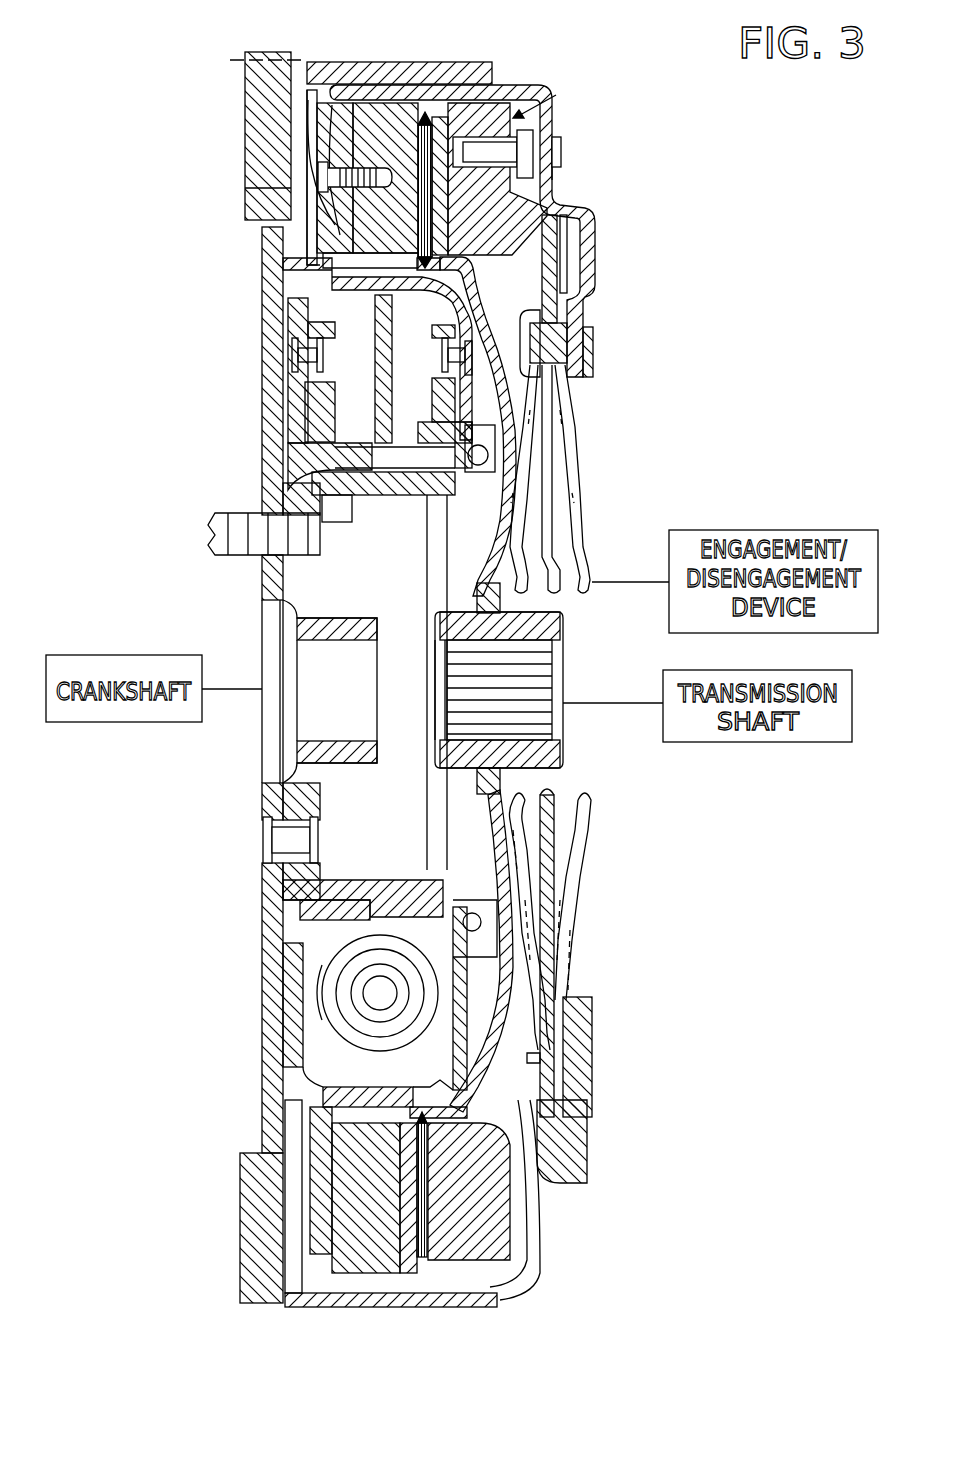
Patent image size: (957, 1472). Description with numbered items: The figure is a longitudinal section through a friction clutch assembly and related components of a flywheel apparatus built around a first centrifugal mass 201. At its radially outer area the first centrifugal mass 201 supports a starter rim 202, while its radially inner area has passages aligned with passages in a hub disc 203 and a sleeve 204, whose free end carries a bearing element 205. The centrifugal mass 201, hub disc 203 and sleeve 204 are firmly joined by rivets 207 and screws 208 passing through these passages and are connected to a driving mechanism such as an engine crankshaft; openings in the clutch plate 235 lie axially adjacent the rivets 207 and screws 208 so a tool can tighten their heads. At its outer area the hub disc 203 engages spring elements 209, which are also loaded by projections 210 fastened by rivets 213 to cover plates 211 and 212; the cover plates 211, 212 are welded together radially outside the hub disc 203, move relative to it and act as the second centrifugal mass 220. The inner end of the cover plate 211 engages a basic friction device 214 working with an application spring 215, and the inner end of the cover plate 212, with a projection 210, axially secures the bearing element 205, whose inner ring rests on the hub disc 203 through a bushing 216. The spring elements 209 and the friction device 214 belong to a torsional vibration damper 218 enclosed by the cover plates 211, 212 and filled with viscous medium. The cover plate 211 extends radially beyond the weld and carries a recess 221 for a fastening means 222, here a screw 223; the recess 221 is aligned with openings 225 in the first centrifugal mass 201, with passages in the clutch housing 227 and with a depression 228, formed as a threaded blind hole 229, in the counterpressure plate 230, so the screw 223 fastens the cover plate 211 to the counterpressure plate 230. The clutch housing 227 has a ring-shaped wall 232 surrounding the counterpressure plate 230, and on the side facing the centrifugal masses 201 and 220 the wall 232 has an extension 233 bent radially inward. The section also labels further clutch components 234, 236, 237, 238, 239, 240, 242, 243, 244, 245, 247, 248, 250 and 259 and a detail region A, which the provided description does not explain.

The first centrifugal mass 201 is at (255, 468).
The starter rim 202 is at (268, 78).
The hub disc 203 is at (378, 395).
The sleeve 204 is at (262, 497).
The bearing element 205 is at (490, 488).
The rivets 207 is at (285, 840).
The screws 208 is at (230, 557).
The spring elements 209 is at (345, 1045).
The projections 210 is at (335, 432).
The cover plate 211 is at (305, 320).
The cover plate 212 is at (470, 403).
The rivets 213 is at (440, 350).
The basic friction device 214 is at (285, 945).
The application spring 215 is at (300, 900).
The bushing 216 is at (392, 480).
The torsional vibration damper 218 is at (322, 990).
The second centrifugal mass 220 is at (307, 283).
The recess 221 is at (325, 142).
The fastening means 222 is at (318, 175).
The screw 223 is at (320, 192).
The openings 225 is at (258, 182).
The clutch housing 227 is at (525, 82).
The depression 228 is at (337, 230).
The blind hole 229 is at (368, 168).
The counterpressure plate 230 is at (290, 258).
The ring-shaped wall 232 is at (468, 92).
The extension 233 is at (330, 118).
The pin 234 is at (440, 125).
The clutch plate 235 is at (495, 288).
The hub body 236 is at (549, 632).
The hub splines 237 is at (530, 645).
The support ring 238 is at (562, 262).
The housing wall 239 is at (553, 118).
The fastening bolt 240 is at (532, 163).
The lever spring 242 is at (585, 360).
The lever tips 243 is at (548, 488).
The release bearing ball 244 is at (545, 436).
The flange 245 is at (573, 200).
The pivot ring 247 is at (558, 312).
The pivot clip 248 is at (540, 333).
The chamber 250 is at (557, 85).
The gap 259 is at (332, 125).
The region A is at (322, 118).